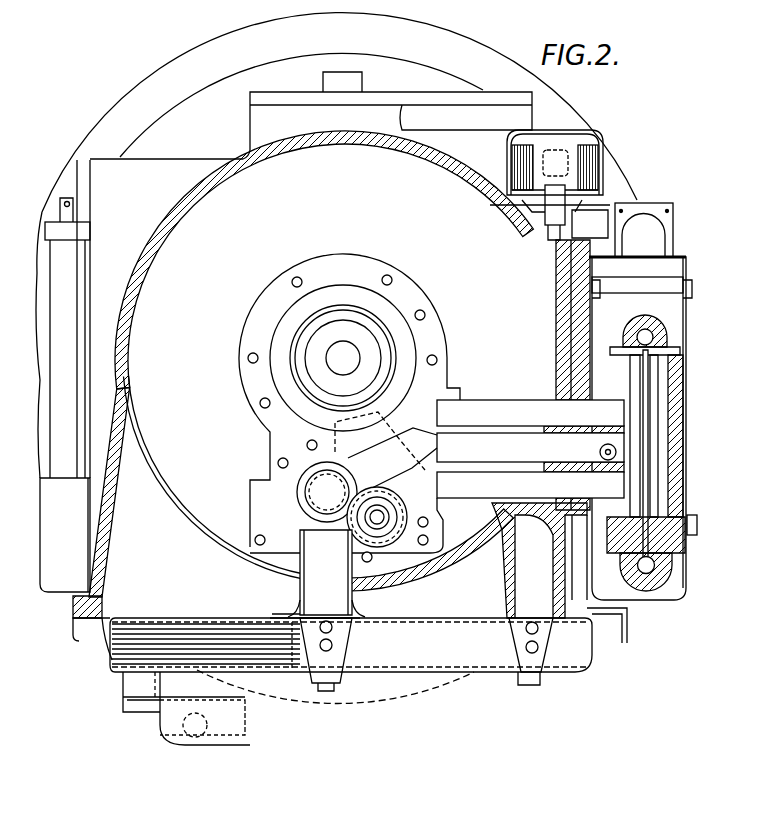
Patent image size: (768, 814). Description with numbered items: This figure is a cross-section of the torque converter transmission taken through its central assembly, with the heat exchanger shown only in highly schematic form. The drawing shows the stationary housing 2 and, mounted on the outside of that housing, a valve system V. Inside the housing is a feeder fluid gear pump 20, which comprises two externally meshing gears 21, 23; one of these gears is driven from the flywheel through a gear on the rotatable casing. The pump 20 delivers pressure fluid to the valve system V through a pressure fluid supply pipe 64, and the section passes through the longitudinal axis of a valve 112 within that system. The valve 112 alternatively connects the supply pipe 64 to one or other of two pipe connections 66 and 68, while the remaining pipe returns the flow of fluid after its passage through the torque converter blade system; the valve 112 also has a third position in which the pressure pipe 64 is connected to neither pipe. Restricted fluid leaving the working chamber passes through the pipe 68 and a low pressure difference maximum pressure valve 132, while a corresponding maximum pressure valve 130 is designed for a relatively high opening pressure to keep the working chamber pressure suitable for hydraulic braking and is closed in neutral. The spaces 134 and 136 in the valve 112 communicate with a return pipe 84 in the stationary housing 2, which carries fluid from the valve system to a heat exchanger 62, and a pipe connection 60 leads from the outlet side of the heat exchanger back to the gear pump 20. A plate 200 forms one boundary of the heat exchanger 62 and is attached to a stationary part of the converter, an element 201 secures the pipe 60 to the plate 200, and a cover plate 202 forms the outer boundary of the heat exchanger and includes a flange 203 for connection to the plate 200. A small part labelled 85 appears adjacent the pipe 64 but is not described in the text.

The stationary housing 2 is at (212, 540).
The feeder fluid gear pump 20 is at (265, 509).
The gear 21 is at (337, 501).
The gear 23 is at (378, 505).
The pipe connection 60 is at (333, 574).
The heat exchanger 62 is at (440, 664).
The pressure fluid supply pipe 64 is at (514, 464).
The pipe connection 66 is at (509, 497).
The pipe connection 68 is at (520, 423).
The return pipe 84 is at (541, 574).
The pin 85 is at (600, 453).
The valve 112 is at (672, 455).
The maximum pressure valve 130 is at (686, 500).
The low pressure difference maximum pressure valve 132 is at (680, 396).
The space 134 is at (697, 523).
The space 136 is at (684, 388).
The plate 200 is at (176, 619).
The element 201 is at (273, 614).
The cover plate 202 is at (116, 669).
The flange 203 is at (88, 622).
The valve system V is at (700, 321).